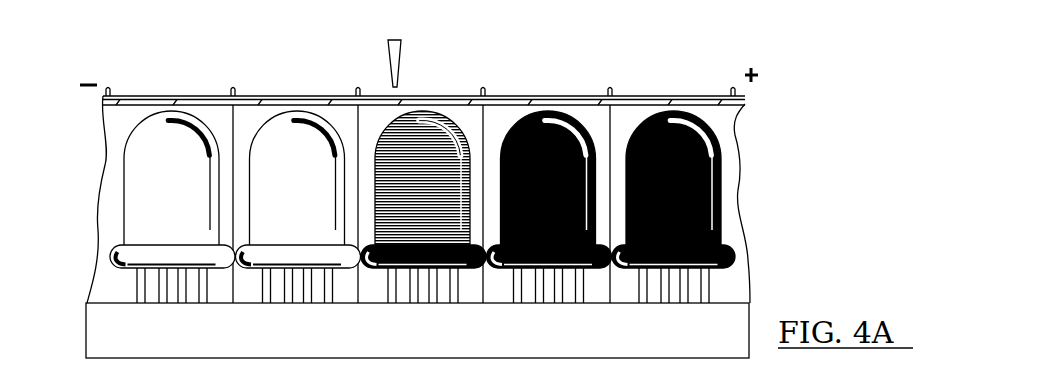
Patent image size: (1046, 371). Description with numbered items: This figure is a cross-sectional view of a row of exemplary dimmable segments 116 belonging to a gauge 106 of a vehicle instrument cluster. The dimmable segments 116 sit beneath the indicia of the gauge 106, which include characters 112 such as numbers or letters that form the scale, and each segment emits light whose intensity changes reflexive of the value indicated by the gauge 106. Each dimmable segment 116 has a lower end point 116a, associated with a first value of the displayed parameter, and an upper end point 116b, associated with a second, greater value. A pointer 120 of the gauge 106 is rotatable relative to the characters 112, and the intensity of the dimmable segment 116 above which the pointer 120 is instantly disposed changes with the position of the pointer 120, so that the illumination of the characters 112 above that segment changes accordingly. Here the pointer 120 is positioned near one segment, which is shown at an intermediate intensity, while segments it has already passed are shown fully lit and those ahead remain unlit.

The gauge 106 is at (170, 60).
The characters 112 is at (285, 96).
The dimmable segment 116 is at (155, 190).
The lower end point 116a is at (357, 88).
The upper end point 116b is at (484, 88).
The pointer 120 is at (390, 68).